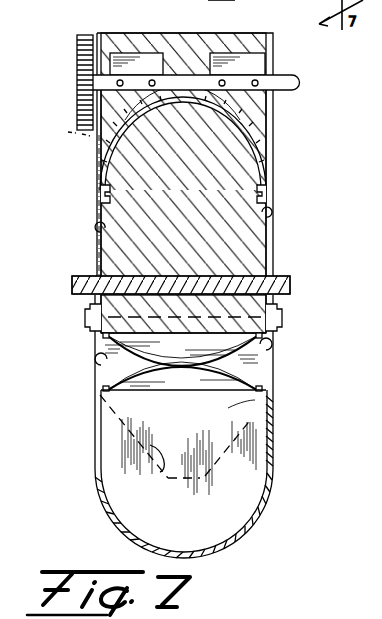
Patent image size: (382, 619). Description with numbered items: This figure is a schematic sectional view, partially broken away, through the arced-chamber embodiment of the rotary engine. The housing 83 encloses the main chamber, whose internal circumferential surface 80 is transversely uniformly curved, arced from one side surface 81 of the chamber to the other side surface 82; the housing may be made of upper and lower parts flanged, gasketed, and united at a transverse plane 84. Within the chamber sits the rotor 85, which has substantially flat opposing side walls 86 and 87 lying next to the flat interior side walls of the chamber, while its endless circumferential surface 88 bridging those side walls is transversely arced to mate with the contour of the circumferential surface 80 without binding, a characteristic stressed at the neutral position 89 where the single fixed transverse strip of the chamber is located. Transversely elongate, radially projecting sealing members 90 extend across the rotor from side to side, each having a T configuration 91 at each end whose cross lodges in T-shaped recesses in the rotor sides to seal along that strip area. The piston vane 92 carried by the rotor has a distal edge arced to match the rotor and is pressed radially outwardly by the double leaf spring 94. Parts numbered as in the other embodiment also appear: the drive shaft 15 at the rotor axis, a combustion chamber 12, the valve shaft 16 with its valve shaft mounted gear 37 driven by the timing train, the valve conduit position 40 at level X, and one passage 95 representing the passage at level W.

The combustion chamber 12 is at (134, 60).
The drive shaft 15 is at (270, 284).
The valve shaft 16 is at (286, 82).
The valve shaft mounted gear 37 is at (77, 60).
The valve conduit position 40 is at (153, 79).
The internal circumferential surface 80 is at (232, 512).
The side surface of the main chamber 81 is at (100, 366).
The side surface of the main chamber 82 is at (270, 358).
The housing 83 is at (274, 152).
The transverse plane 84 is at (280, 318).
The rotor 85 is at (123, 253).
The rotor side wall 86 is at (101, 232).
The rotor side wall 87 is at (266, 217).
The endless circumferential surface of the rotor 88 is at (150, 445).
The neutral position 89 is at (180, 108).
The sealing member 90 is at (257, 133).
The T configuration 91 is at (100, 190).
The piston vane 92 is at (274, 402).
The double leaf spring 94 is at (173, 353).
The passage 95 is at (72, 197).